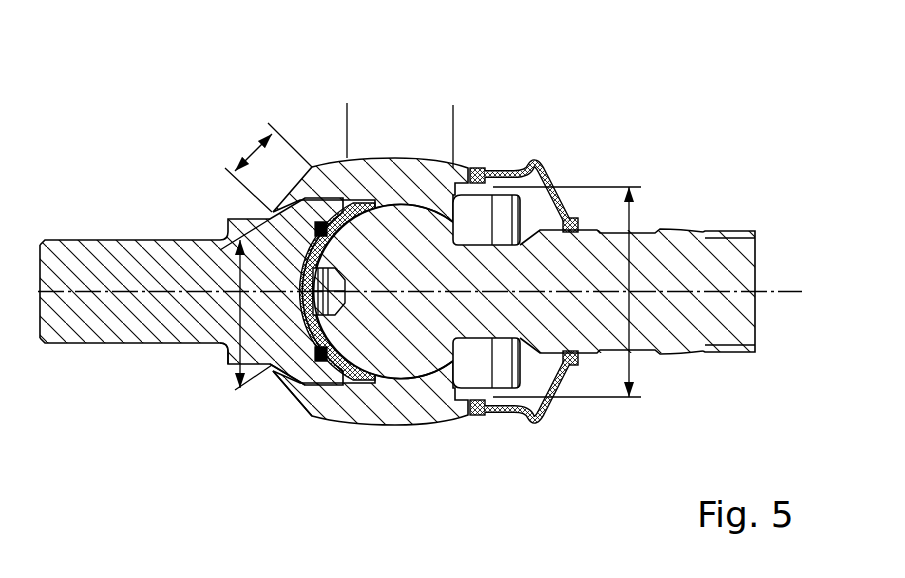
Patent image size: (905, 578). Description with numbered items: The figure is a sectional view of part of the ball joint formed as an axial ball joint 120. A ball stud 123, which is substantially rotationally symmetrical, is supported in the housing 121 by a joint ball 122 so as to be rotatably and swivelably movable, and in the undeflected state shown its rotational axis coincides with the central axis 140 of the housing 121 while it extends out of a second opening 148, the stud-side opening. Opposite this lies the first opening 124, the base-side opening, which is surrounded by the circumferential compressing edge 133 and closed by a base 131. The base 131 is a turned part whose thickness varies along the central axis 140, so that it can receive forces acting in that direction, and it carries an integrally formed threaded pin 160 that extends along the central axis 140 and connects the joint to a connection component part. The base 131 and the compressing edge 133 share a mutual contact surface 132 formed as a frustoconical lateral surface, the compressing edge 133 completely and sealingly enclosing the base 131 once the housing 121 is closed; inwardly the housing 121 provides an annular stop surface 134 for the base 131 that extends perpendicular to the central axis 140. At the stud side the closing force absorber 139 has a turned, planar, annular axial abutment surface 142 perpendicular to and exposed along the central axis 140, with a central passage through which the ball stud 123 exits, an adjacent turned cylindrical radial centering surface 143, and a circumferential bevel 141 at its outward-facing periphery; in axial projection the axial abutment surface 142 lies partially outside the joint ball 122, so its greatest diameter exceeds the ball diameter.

The axial ball joint 120 is at (618, 145).
The housing 121 is at (384, 158).
The joint ball 122 is at (353, 350).
The ball stud 123 is at (699, 222).
The first opening 124 is at (213, 334).
The base 131 is at (221, 216).
The contact surface 132 is at (250, 153).
The compressing edge 133 is at (287, 386).
The stop surface 134 is at (347, 131).
The closing force absorber 139 is at (485, 365).
The central axis 140 is at (790, 292).
The circumferential bevel 141 is at (480, 222).
The axial abutment surface 142 is at (453, 128).
The radial centering surface 143 is at (513, 395).
The second opening 148 is at (630, 263).
The threaded pin 160 is at (82, 262).